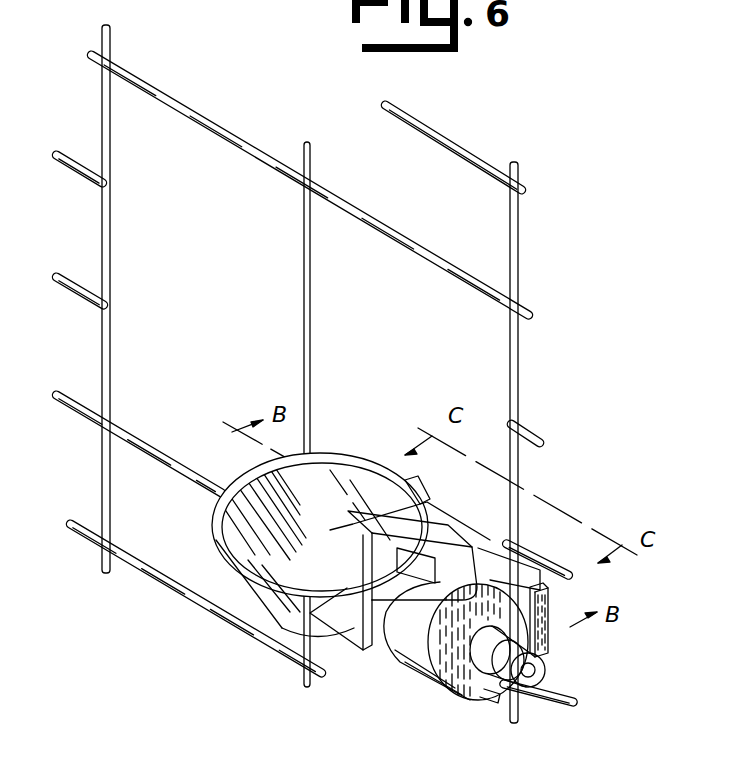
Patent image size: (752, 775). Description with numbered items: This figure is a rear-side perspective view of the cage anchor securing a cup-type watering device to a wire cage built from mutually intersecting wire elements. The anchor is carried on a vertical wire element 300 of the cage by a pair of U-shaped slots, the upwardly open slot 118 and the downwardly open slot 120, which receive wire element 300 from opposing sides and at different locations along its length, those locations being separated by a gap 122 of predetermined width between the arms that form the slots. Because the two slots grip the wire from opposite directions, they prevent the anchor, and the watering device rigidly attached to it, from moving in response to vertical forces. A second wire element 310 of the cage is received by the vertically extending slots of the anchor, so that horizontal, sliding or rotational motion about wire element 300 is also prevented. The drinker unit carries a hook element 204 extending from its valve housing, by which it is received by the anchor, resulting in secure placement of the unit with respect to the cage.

The U-shaped slot 118 is at (500, 538).
The U-shaped slot 120 is at (527, 625).
The gap 122 is at (545, 593).
The hook element 204 is at (448, 540).
The wire element 300 is at (517, 525).
The wire element 310 is at (568, 688).